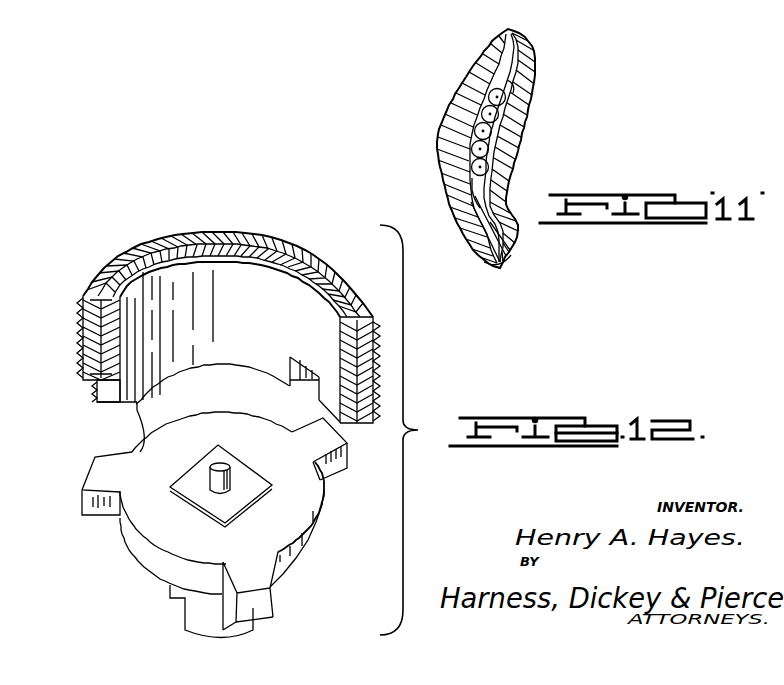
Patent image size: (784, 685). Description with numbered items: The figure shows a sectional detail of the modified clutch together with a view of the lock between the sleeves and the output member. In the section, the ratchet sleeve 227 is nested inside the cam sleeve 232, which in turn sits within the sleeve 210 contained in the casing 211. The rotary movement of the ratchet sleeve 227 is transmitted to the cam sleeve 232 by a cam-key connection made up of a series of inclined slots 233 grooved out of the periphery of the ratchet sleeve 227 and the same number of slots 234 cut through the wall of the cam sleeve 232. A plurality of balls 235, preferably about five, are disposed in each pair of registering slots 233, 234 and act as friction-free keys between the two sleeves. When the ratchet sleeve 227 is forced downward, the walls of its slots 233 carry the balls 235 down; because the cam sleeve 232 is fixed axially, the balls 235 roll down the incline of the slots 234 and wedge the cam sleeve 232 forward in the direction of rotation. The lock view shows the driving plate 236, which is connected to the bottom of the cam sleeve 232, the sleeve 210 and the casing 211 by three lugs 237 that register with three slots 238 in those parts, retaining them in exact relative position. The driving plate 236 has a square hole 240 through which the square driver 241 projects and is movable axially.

In FIG. 11, the sleeve 210 is at (493, 58).
In FIG. 12, the sleeve 210 is at (378, 368).
In FIG. 11, the casing 211 is at (450, 98).
In FIG. 12, the casing 211 is at (378, 333).
In FIG. 11, the ratchet sleeve 227 is at (500, 138).
In FIG. 11, the slots 233 is at (513, 92).
In FIG. 11, the balls 235 is at (493, 115).
In FIG. 11, the slots 234 is at (480, 188).
In FIG. 11, the cam sleeve 232 is at (513, 238).
In FIG. 12, the cam sleeve 232 is at (103, 335).
In FIG. 12, the slots 238 is at (103, 398).
In FIG. 12, the lugs 237 is at (80, 500).
In FIG. 12, the driving plate 236 is at (147, 553).
In FIG. 12, the square hole 240 is at (212, 518).
In FIG. 12, the square driver 241 is at (237, 497).